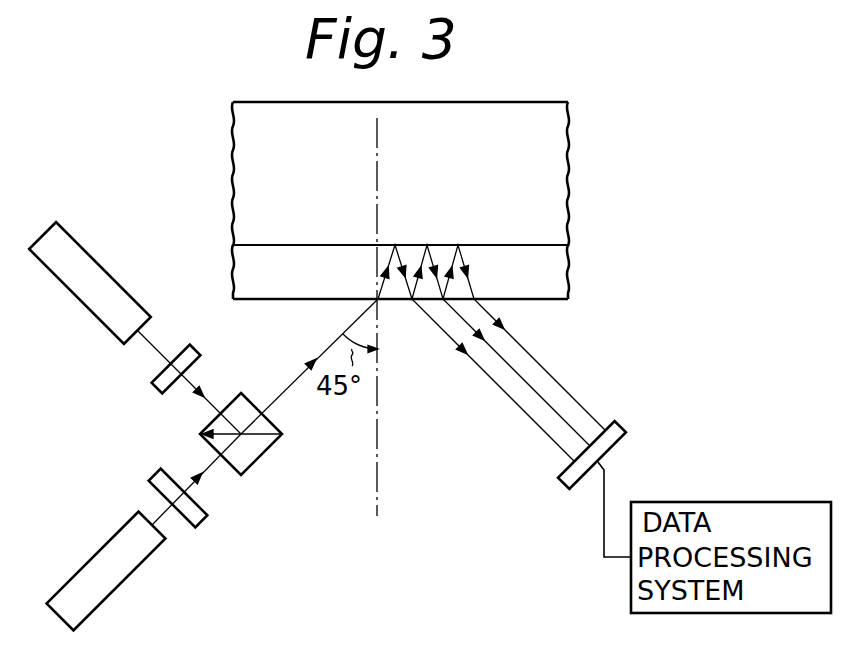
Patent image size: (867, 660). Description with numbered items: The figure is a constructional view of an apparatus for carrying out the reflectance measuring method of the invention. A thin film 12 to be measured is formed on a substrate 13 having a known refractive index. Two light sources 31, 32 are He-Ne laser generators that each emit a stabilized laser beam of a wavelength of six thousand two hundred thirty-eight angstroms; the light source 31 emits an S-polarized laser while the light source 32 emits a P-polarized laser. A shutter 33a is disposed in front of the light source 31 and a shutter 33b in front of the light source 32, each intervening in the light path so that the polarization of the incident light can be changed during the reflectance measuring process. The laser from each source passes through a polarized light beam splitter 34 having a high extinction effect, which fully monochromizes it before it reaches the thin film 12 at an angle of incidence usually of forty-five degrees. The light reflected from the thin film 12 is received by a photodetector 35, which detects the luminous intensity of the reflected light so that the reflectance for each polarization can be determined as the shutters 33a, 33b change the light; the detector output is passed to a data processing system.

The thin film 12 is at (560, 279).
The substrate 13 is at (560, 172).
The light source 31 is at (73, 582).
The light source 32 is at (70, 290).
The shutter 33a is at (200, 522).
The shutter 33b is at (157, 391).
The polarized light beam splitter 34 is at (263, 460).
The photodetector 35 is at (623, 446).